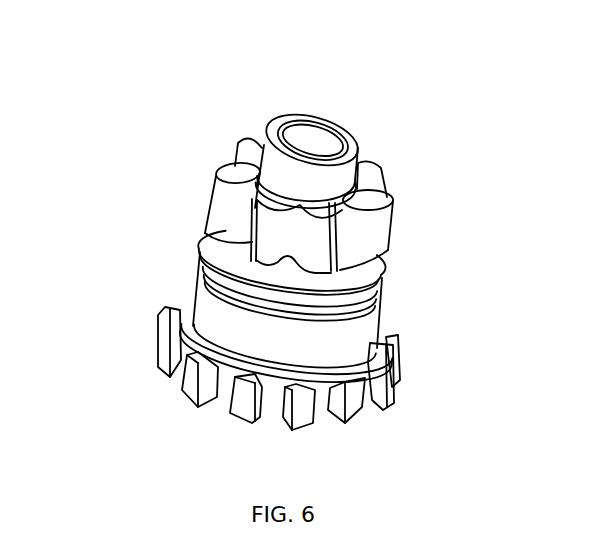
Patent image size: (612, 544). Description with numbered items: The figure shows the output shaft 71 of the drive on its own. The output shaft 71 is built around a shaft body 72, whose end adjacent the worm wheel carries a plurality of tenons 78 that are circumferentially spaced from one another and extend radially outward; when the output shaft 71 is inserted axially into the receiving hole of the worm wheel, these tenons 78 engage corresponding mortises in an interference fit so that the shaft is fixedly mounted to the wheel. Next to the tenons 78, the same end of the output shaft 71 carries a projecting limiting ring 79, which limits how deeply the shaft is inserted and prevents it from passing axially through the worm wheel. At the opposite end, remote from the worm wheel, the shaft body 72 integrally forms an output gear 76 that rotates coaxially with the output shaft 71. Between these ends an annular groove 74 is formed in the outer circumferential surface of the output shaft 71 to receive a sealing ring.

The output shaft 71 is at (331, 78).
The shaft body 72 is at (212, 307).
The annular groove 74 is at (360, 285).
The output gear 76 is at (233, 208).
The tenons 78 is at (180, 362).
The limiting ring 79 is at (372, 342).